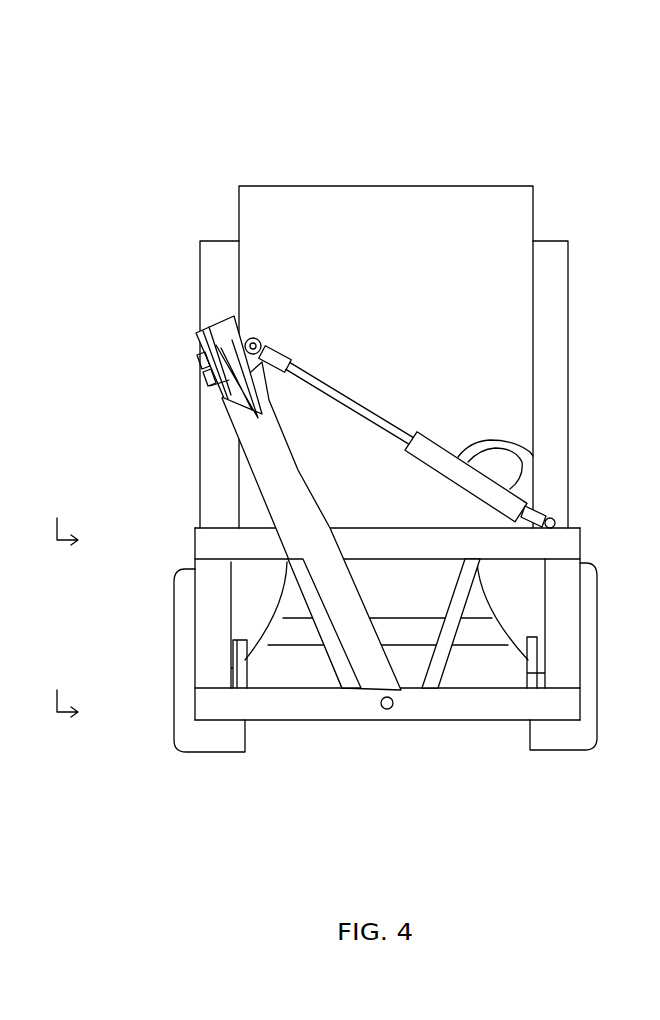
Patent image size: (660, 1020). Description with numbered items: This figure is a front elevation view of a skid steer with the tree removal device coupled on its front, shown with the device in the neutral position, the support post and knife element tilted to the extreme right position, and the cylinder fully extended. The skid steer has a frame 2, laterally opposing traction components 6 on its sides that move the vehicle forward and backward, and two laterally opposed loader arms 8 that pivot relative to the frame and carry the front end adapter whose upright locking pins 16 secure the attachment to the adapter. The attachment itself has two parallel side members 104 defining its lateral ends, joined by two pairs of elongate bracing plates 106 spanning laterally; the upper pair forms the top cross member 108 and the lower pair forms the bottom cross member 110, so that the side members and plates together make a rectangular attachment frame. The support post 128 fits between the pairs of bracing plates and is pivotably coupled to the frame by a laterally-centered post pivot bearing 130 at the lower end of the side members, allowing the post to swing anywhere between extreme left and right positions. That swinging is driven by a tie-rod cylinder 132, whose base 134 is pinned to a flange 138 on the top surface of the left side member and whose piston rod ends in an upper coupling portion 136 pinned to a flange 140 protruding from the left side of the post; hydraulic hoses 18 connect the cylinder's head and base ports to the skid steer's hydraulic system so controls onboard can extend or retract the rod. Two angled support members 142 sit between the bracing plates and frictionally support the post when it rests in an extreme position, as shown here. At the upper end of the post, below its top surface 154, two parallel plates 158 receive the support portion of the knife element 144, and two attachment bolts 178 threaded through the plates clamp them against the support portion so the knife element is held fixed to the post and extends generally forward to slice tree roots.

The frame 2 is at (323, 183).
The traction components 6 is at (180, 757).
The loader arms 8 is at (215, 240).
The locking pins 16 is at (248, 660).
The hydraulic hoses 18 is at (502, 416).
The side members 104 is at (207, 665).
The bracing plates 106 is at (193, 547).
The top cross member 108 is at (65, 516).
The bottom cross member 110 is at (64, 687).
The support post 128 is at (277, 480).
The post pivot bearing 130 is at (383, 712).
The tie-rod cylinder 132 is at (452, 426).
The base 134 is at (537, 510).
The upper coupling portion 136 is at (272, 350).
The flange 138 is at (560, 528).
The flange 140 is at (252, 342).
The support members 142 is at (335, 660).
The knife element 144 is at (257, 434).
The top surface 154 is at (213, 328).
The parallel plates 158 is at (196, 340).
The attachment bolts 178 is at (195, 362).